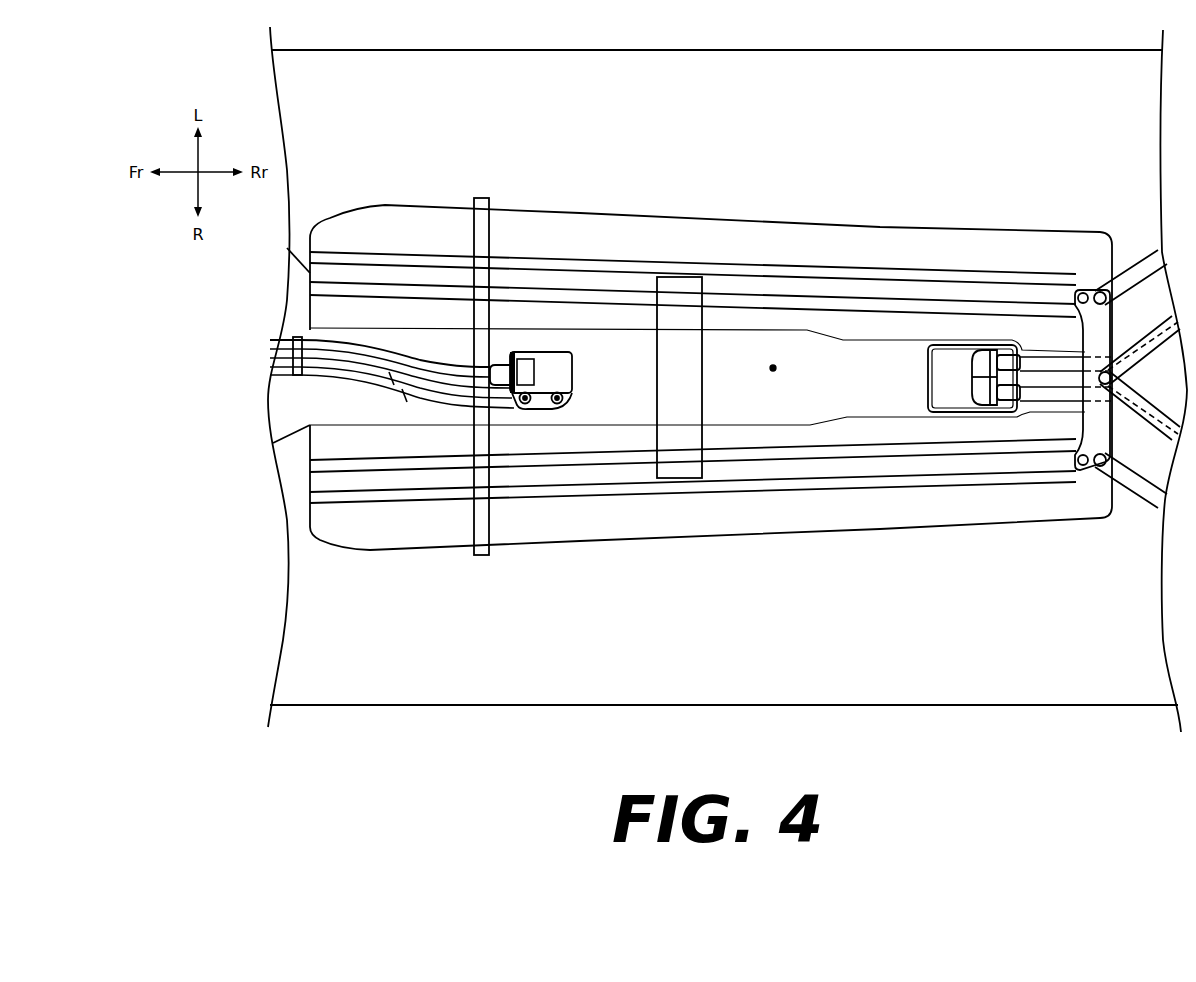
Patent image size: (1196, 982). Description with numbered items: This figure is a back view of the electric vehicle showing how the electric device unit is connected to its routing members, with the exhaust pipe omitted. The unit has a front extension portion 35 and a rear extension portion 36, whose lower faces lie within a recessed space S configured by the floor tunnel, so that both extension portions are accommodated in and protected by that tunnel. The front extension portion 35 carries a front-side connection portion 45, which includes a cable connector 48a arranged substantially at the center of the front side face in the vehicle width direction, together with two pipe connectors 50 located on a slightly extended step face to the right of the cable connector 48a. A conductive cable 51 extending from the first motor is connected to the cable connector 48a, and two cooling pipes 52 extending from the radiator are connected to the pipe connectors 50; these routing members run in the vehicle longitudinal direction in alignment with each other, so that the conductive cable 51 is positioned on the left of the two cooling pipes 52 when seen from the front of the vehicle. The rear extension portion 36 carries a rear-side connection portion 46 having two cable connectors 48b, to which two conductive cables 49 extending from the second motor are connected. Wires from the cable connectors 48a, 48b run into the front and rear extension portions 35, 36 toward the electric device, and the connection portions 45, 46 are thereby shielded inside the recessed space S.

The front extension portion 35 is at (552, 370).
The rear extension portion 36 is at (952, 370).
The front-side connection portion 45 is at (537, 353).
The rear-side connection portion 46 is at (981, 363).
The cable connector 48a is at (500, 372).
The cable connectors 48b is at (1045, 362).
The conductive cables 49 is at (1066, 362).
The pipe connectors 50 is at (525, 405).
The conductive cable 51 is at (353, 350).
The cooling pipes 52 is at (392, 378).
The recessed space S is at (773, 366).